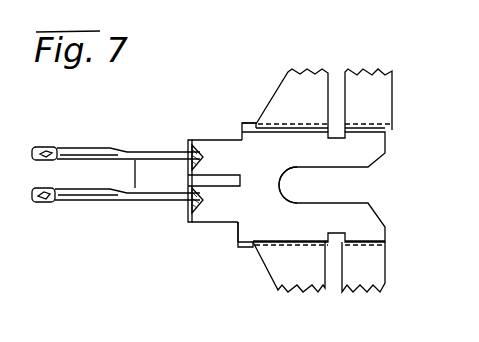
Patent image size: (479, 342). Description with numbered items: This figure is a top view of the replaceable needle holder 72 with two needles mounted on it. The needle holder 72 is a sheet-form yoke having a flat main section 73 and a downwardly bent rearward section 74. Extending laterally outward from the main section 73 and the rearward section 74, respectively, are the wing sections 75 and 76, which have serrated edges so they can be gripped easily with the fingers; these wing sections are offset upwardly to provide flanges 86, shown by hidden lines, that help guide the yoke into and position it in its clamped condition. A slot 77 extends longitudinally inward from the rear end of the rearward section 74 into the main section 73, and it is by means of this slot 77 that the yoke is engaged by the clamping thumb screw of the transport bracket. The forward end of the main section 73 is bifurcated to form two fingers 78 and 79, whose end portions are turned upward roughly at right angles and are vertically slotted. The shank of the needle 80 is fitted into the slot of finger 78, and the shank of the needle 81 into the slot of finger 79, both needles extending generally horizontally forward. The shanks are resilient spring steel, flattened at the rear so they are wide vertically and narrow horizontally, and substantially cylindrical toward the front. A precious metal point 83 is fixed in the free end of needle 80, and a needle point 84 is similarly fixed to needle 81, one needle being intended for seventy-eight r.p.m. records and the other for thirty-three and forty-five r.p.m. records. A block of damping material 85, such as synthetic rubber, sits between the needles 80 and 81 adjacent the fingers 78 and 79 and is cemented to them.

The needle holder 72 is at (254, 263).
The flat main section 73 is at (250, 222).
The downwardly bent rearward section 74 is at (382, 158).
The wing section 75 is at (292, 82).
The wing section 76 is at (365, 83).
The slot 77 is at (342, 187).
The finger 78 is at (208, 221).
The finger 79 is at (212, 140).
The needle 80 is at (90, 203).
The needle 81 is at (95, 148).
The precious metal point 83 is at (38, 202).
The needle point 84 is at (44, 150).
The block of damping material 85 is at (162, 183).
The flange 86 is at (283, 128).